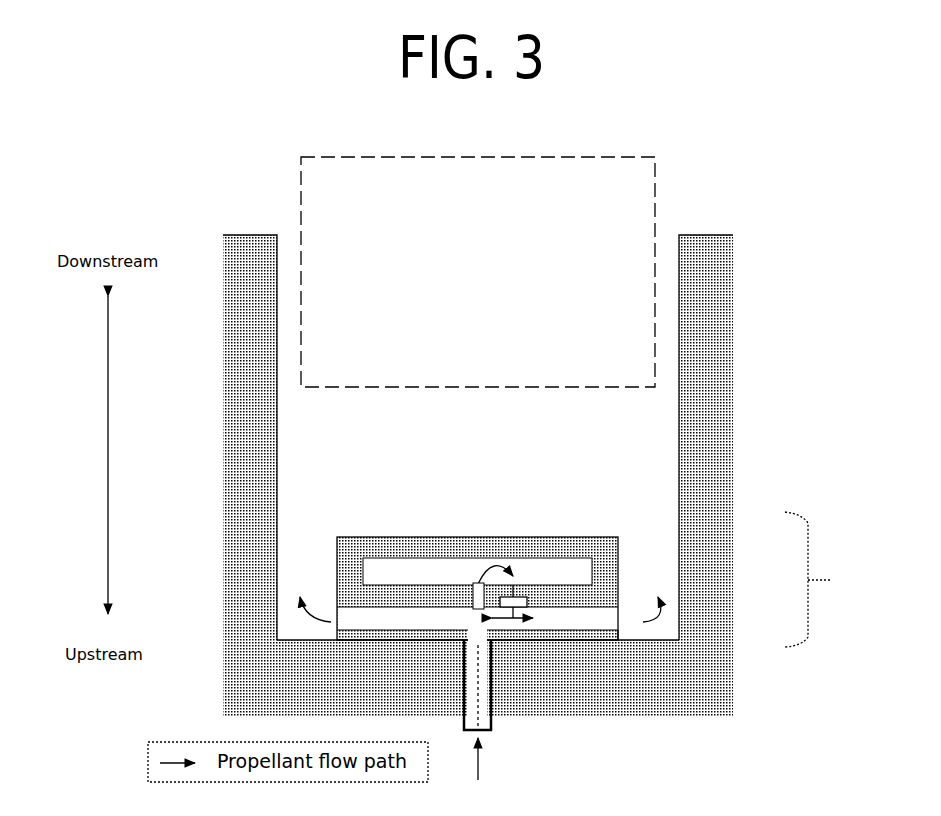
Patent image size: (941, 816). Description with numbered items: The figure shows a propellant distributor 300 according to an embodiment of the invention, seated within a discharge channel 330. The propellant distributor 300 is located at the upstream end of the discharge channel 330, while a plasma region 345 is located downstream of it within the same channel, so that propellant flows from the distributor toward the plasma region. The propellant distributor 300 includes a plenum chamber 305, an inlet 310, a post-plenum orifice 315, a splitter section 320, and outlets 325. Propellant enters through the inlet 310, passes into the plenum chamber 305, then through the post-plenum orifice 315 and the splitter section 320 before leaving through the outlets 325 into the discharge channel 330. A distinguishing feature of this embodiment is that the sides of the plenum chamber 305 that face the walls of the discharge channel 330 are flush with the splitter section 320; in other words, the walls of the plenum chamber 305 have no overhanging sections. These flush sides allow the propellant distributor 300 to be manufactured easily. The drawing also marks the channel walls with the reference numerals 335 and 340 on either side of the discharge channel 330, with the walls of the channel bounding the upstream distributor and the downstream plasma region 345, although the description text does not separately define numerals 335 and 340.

The propellant distributor 300 is at (832, 579).
The plenum chamber 305 is at (377, 572).
The inlet 310 is at (503, 738).
The post-plenum orifice 315 is at (515, 574).
The splitter section 320 is at (432, 628).
The outlets 325 is at (627, 639).
The discharge channel 330 is at (693, 212).
The chamber wall 335 is at (238, 257).
The chamber wall 340 is at (722, 272).
The plasma region 345 is at (478, 272).